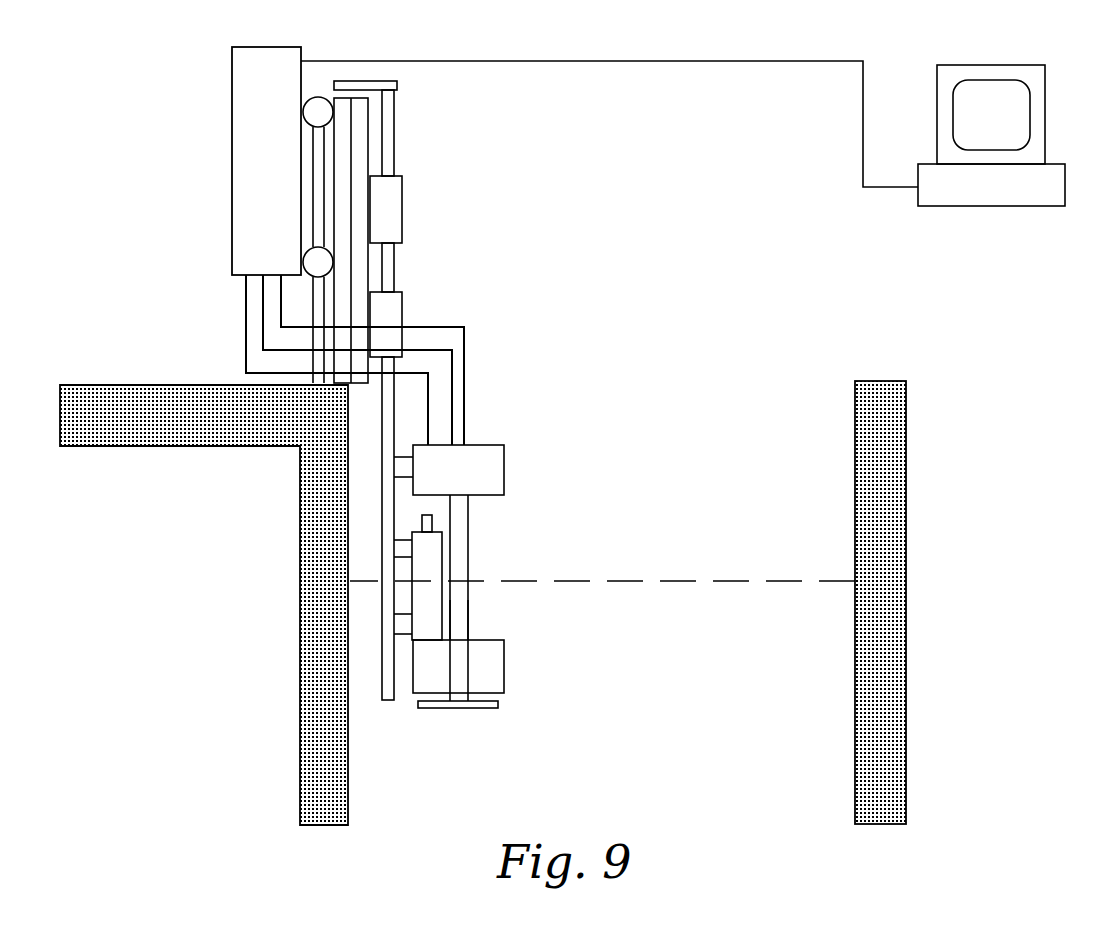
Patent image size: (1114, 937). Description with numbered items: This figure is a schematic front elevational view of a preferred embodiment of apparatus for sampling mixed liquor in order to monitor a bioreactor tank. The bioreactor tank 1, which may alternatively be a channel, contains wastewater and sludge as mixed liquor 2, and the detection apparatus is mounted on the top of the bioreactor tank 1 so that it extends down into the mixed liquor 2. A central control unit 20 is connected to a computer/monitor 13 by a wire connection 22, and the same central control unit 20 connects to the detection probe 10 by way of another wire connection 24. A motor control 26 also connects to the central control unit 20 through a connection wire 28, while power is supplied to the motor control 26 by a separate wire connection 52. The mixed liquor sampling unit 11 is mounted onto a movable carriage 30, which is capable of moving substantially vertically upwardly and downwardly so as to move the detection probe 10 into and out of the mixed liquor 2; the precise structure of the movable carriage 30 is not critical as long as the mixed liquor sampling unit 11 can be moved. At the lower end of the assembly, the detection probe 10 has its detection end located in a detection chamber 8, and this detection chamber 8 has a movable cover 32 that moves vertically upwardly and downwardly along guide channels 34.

The bioreactor tank 1 is at (300, 665).
The mixed liquor 2 is at (677, 751).
The detection chamber 8 is at (504, 667).
The detection probe 10 is at (442, 560).
The mixed liquor sampling unit 11 is at (473, 516).
The computer/monitor 13 is at (1022, 206).
The central control unit 20 is at (289, 177).
The wire connection 22 is at (635, 61).
The wire connection 24 is at (246, 328).
The motor control 26 is at (504, 472).
The connection wire 28 is at (453, 365).
The movable carriage 30 is at (400, 266).
The movable cover 32 is at (480, 708).
The guide channels 34 is at (468, 613).
The wire connection 52 is at (449, 325).